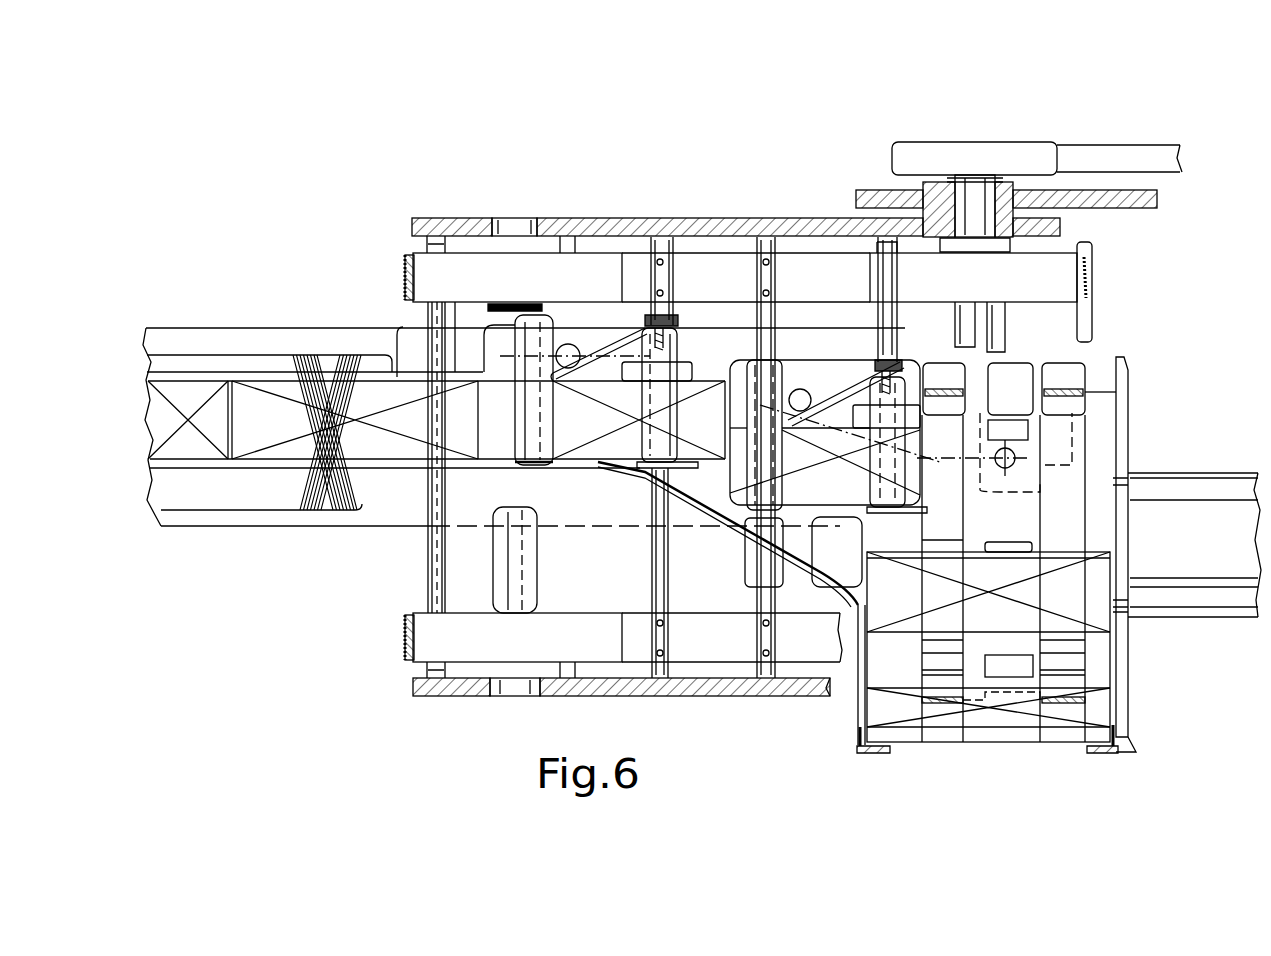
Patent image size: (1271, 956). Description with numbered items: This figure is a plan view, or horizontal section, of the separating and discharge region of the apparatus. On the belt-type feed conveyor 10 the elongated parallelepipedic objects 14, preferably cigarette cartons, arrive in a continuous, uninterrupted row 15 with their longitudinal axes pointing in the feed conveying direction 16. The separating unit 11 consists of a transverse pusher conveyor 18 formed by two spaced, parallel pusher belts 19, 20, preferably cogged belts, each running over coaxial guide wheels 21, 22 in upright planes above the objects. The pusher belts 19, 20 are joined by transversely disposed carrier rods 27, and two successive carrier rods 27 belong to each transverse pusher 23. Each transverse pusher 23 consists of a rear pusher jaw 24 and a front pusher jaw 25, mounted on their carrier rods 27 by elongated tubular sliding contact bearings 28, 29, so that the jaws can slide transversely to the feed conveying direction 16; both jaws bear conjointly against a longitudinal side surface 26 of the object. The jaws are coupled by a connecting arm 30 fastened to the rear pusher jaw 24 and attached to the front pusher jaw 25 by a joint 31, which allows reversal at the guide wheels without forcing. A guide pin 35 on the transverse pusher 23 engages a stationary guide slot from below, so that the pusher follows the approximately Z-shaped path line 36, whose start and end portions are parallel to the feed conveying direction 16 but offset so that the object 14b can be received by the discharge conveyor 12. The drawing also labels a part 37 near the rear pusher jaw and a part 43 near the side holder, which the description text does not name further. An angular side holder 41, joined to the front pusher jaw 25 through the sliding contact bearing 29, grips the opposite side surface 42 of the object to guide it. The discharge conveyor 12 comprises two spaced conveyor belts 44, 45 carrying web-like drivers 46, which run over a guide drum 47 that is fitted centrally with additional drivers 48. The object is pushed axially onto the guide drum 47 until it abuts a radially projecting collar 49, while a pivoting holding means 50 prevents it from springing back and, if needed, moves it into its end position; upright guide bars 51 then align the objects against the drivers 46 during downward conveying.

The feed conveyor 10 is at (186, 298).
The separating unit 11 is at (597, 162).
The discharge conveyor 12 is at (988, 748).
The objects 14 is at (267, 435).
The object 14b is at (1165, 643).
The row 15 is at (185, 468).
The feed conveying direction 16 is at (173, 420).
The transverse pusher conveyor 18 is at (398, 668).
The pusher belt 19 is at (406, 265).
The pusher belt 20 is at (407, 634).
The guide wheels 21 is at (466, 265).
The guide wheels 22 is at (1058, 278).
The transverse pusher 23 is at (579, 303).
The pusher jaw 24 is at (505, 395).
The pusher jaw 25 is at (688, 368).
The side surface 26 is at (505, 407).
The carrier rods 27 is at (771, 345).
The sliding contact bearing 28 is at (525, 455).
The sliding contact bearing 29 is at (640, 393).
The connecting arm 30 is at (831, 365).
The joint 31 is at (668, 315).
The guide pin 35 is at (567, 344).
The path line 36 is at (718, 360).
The carriage 37 is at (497, 345).
The side holder 41 is at (692, 472).
The side surface 42 is at (626, 465).
The lever arm 43 is at (697, 473).
The conveyor belt 44 is at (930, 640).
The conveyor belt 45 is at (1077, 645).
The drivers 46 is at (1077, 668).
The guide drum 47 is at (1014, 536).
The drivers 48 is at (1003, 368).
The collar 49 is at (1122, 373).
The holding means 50 is at (850, 565).
The guide bars 51 is at (857, 745).